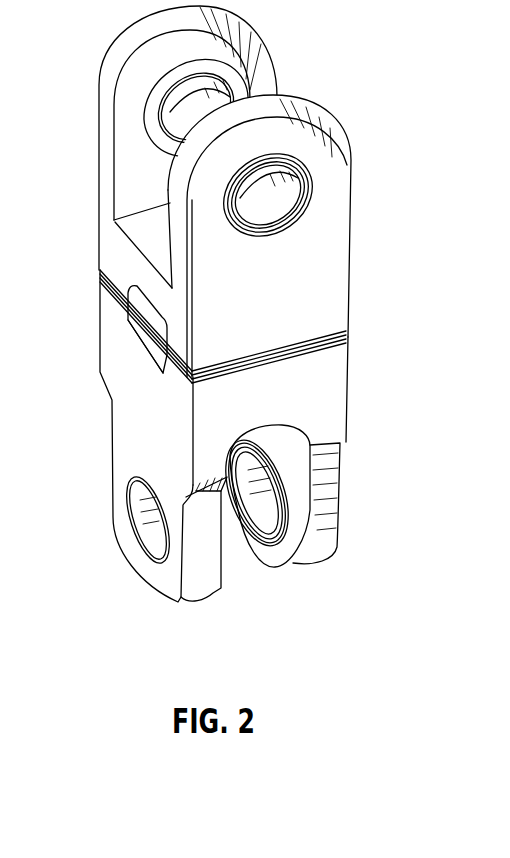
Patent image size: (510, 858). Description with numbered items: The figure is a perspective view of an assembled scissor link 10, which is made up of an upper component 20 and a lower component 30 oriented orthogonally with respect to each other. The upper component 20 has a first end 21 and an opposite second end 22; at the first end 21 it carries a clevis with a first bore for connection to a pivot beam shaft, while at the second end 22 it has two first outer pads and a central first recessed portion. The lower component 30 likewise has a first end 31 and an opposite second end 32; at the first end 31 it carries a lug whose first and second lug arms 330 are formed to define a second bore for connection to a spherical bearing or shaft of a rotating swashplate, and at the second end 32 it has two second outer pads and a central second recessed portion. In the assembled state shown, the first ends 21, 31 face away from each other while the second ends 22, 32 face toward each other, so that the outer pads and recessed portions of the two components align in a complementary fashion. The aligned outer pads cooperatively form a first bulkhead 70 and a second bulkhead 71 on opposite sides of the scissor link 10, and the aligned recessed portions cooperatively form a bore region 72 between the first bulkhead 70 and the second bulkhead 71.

The scissor link 10 is at (97, 248).
The upper component 20 is at (103, 157).
The first end 21 is at (110, 66).
The second end 22 is at (325, 290).
The lower component 30 is at (112, 422).
The first end 31 is at (137, 573).
The second end 32 is at (100, 331).
The first bulkhead 70 is at (92, 258).
The second bulkhead 71 is at (353, 305).
The bore region 72 is at (148, 333).
The lug arms 330 is at (193, 587).